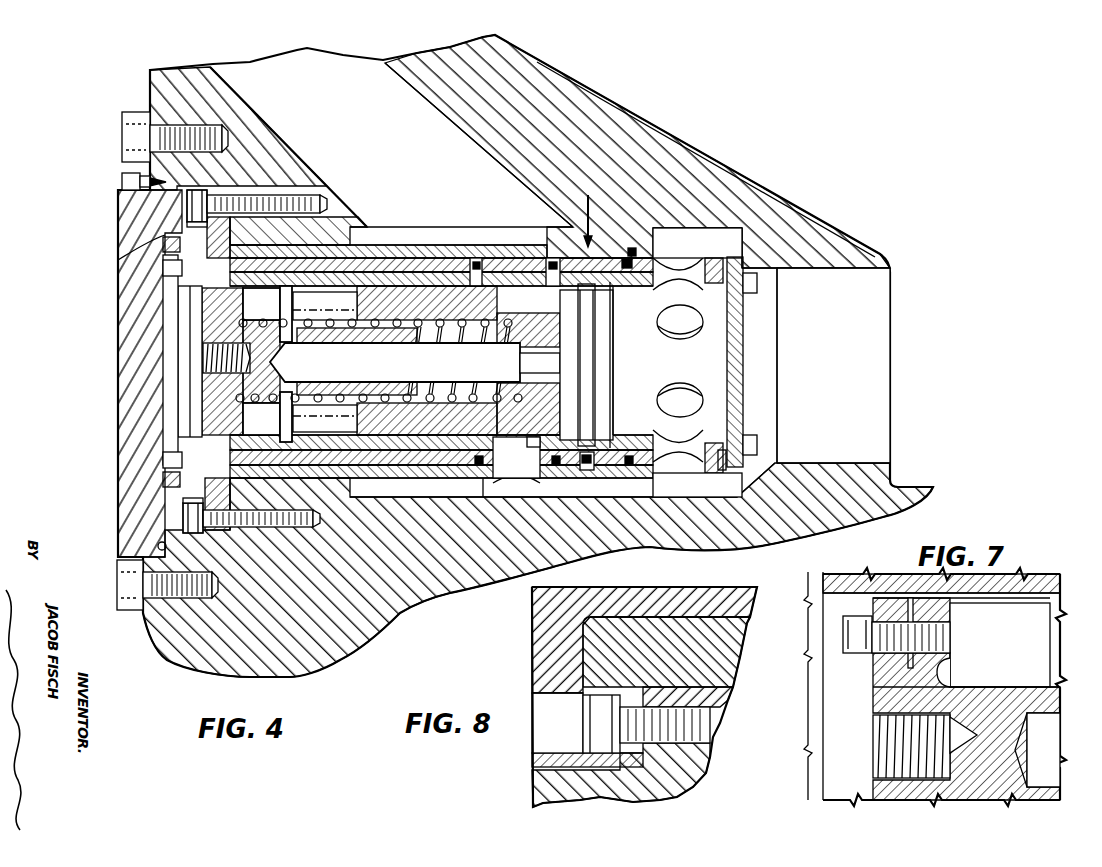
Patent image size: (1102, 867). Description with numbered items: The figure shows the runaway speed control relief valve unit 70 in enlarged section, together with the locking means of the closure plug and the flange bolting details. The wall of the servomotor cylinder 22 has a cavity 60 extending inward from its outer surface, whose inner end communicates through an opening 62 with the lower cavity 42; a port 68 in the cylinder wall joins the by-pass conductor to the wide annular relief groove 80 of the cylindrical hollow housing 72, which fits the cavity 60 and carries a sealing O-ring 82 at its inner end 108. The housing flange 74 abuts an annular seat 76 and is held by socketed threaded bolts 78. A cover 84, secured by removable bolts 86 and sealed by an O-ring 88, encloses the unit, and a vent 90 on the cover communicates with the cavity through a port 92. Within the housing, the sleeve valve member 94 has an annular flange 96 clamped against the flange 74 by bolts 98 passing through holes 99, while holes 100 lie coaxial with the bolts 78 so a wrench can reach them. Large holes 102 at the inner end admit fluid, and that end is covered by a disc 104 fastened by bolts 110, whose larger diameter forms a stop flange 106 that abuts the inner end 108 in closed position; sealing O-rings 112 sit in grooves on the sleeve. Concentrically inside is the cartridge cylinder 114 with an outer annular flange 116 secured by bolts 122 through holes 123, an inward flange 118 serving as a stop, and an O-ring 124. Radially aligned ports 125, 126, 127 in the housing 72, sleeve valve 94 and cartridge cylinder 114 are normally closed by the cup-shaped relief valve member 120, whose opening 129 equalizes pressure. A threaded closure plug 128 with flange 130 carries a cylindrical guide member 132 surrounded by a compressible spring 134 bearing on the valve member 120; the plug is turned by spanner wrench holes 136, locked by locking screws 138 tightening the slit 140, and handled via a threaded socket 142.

In FIG. 4, the servomotor cylinder 22 is at (176, 88).
In FIG. 8, the servomotor cylinder 22 is at (695, 760).
In FIG. 4, the lower cavity 42 is at (748, 160).
In FIG. 4, the cavity 60 is at (430, 498).
In FIG. 8, the cavity 60 is at (718, 700).
In FIG. 4, the opening 62 is at (865, 441).
In FIG. 4, the port 68 is at (430, 152).
In FIG. 4, the relief valve unit 70 is at (585, 209).
In FIG. 4, the housing 72 is at (328, 243).
In FIG. 8, the housing 72 is at (720, 652).
In FIG. 4, the flange 74 is at (300, 212).
In FIG. 8, the flange 74 is at (632, 760).
In FIG. 4, the annular seat 76 is at (262, 208).
In FIG. 8, the threaded bolts 78 is at (600, 727).
In FIG. 4, the relief groove 80 is at (430, 262).
In FIG. 4, the sealing O-ring 82 is at (627, 256).
In FIG. 4, the cover 84 is at (143, 492).
In FIG. 4, the removable bolts 86 is at (135, 138).
In FIG. 4, the O-ring 88 is at (167, 546).
In FIG. 4, the vent 90 is at (122, 183).
In FIG. 4, the port 92 is at (157, 220).
In FIG. 4, the sleeve valve member 94 is at (362, 256).
In FIG. 8, the sleeve valve member 94 is at (672, 600).
In FIG. 4, the annular flange 96 is at (96, 516).
In FIG. 8, the annular flange 96 is at (548, 640).
In FIG. 4, the bolts 98 is at (202, 196).
In FIG. 4, the holes 99 is at (200, 212).
In FIG. 8, the holes 100 is at (553, 755).
In FIG. 4, the holes 102 is at (685, 277).
In FIG. 4, the disc 104 is at (740, 352).
In FIG. 4, the stop flange 106 is at (722, 470).
In FIG. 4, the inner end of housing 108 is at (660, 228).
In FIG. 4, the bolts 110 is at (758, 284).
In FIG. 4, the sealing O-rings 112 is at (556, 258).
In FIG. 4, the cartridge cylinder 114 is at (398, 260).
In FIG. 7, the cartridge cylinder 114 is at (1032, 590).
In FIG. 4, the outer annular flange 116 is at (165, 243).
In FIG. 4, the flange 118 is at (600, 292).
In FIG. 4, the relief valve member 120 is at (474, 258).
In FIG. 4, the bolts 122 is at (172, 270).
In FIG. 4, the holes 123 is at (180, 310).
In FIG. 4, the O-ring 124 is at (588, 466).
In FIG. 4, the port 125 is at (480, 498).
In FIG. 4, the port 126 is at (518, 448).
In FIG. 4, the port 127 is at (531, 445).
In FIG. 4, the threaded closure plug 128 is at (205, 358).
In FIG. 7, the threaded closure plug 128 is at (1020, 697).
In FIG. 4, the opening 129 is at (545, 362).
In FIG. 4, the flange 130 is at (233, 420).
In FIG. 7, the flange 130 is at (940, 612).
In FIG. 4, the cylindrical guide member 132 is at (393, 380).
In FIG. 7, the cylindrical guide member 132 is at (945, 673).
In FIG. 4, the compressible spring 134 is at (436, 402).
In FIG. 4, the spanner wrench holes 136 is at (200, 310).
In FIG. 7, the locking screws 138 is at (857, 642).
In FIG. 7, the slit 140 is at (907, 668).
In FIG. 4, the threaded socket 142 is at (222, 362).
In FIG. 7, the threaded socket 142 is at (893, 745).